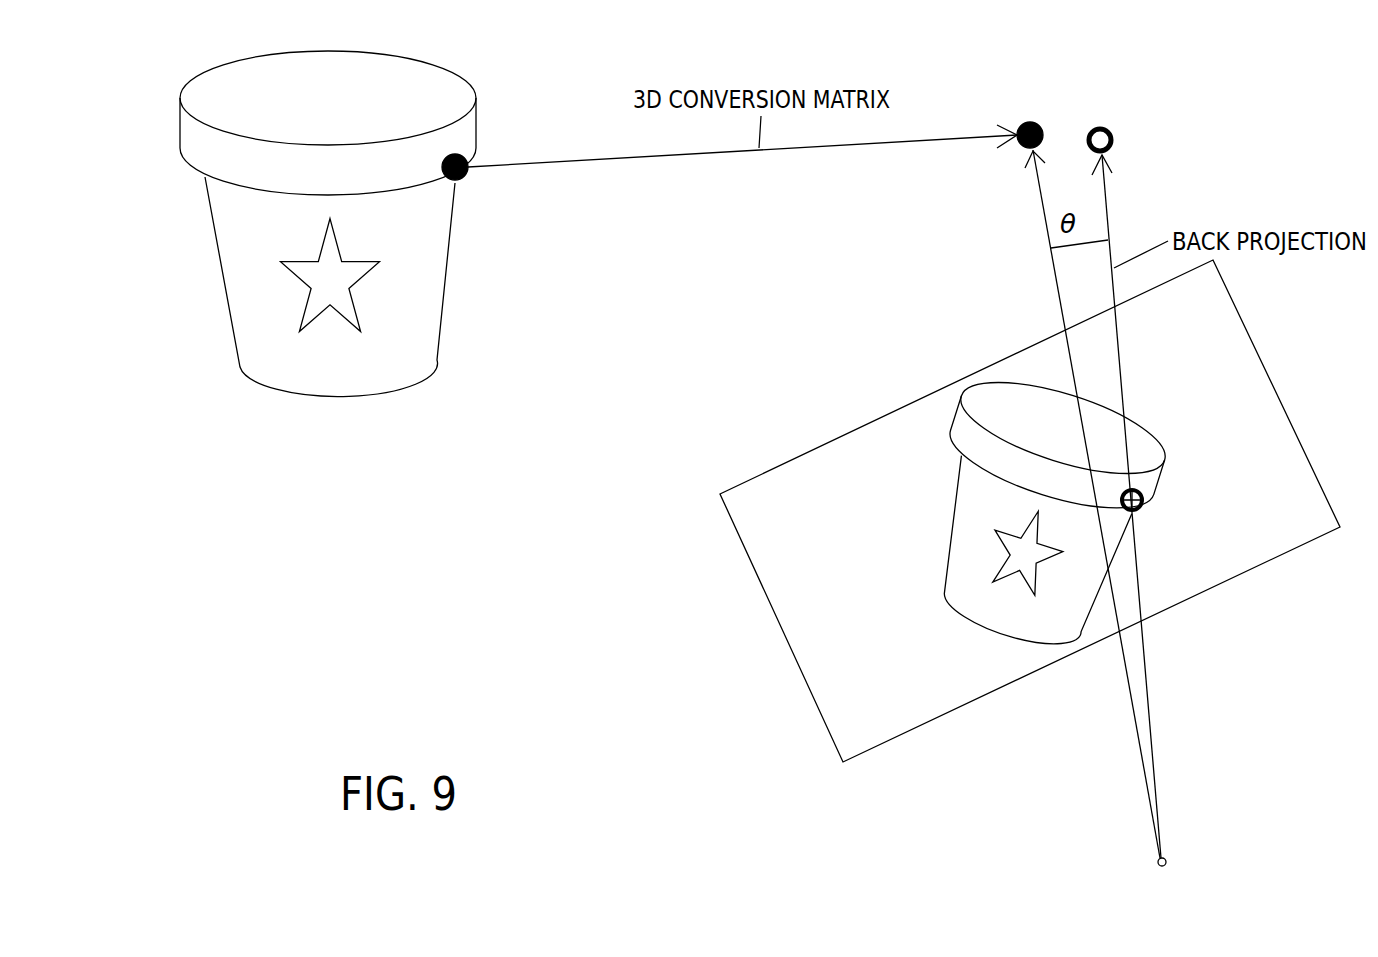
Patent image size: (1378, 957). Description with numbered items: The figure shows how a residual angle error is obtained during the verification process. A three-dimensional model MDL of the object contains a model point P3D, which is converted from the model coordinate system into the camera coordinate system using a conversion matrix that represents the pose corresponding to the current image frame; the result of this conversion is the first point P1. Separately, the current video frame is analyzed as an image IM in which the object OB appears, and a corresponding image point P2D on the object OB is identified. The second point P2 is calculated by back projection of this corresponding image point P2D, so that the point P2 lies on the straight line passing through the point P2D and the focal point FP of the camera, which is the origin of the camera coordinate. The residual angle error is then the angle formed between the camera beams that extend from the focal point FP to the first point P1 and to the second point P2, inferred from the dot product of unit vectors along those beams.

The 3D model MDL is at (480, 90).
The 3D model point P3D is at (465, 180).
The first 3D point P1 is at (1028, 113).
The second 3D point P2 is at (1116, 135).
The focal point FP is at (1167, 862).
The image IM is at (1268, 370).
The object OB is at (964, 408).
The 2D corresponding point P2D is at (1143, 508).